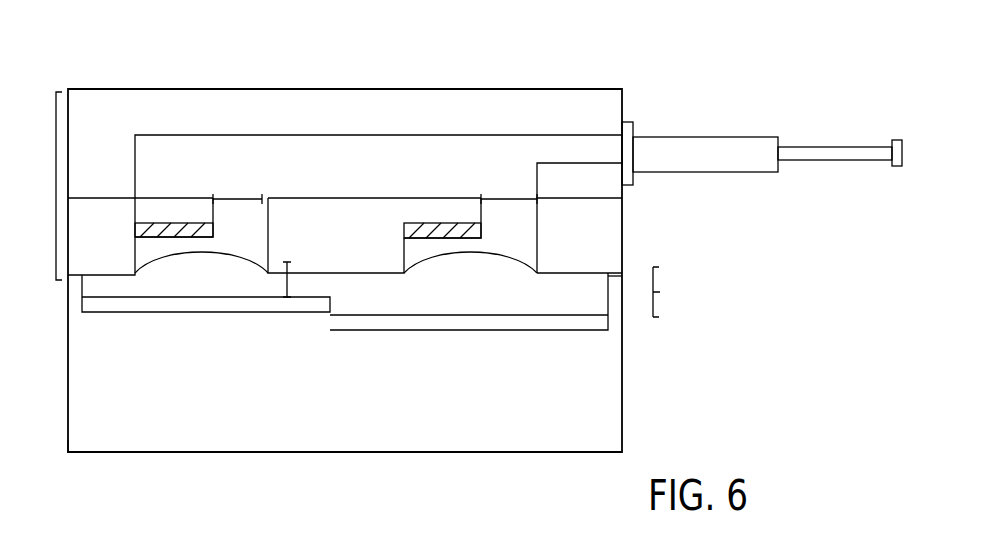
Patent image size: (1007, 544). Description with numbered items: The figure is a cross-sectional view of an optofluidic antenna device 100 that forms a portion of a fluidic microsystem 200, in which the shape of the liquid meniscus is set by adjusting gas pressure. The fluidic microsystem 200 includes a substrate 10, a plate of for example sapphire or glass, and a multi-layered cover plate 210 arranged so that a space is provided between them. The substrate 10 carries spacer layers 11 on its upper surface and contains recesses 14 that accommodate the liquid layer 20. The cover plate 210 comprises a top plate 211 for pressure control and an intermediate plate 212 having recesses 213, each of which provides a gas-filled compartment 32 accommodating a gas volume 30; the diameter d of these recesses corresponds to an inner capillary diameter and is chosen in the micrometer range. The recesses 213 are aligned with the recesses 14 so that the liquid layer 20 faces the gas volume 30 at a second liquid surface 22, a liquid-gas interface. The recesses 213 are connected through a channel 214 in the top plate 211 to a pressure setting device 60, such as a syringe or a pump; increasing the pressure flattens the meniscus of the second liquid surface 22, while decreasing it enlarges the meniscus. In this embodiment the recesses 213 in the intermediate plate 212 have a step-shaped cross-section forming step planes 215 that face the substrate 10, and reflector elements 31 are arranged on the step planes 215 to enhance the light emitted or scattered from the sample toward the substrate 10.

The optofluidic antenna device 100 is at (453, 230).
The fluidic microsystem 200 is at (165, 37).
The substrate 10 is at (108, 424).
The spacer layers 11 is at (108, 306).
The recesses 14 is at (403, 293).
The liquid layer 20 is at (489, 284).
The second liquid surface 22 is at (200, 261).
The gas volume 30 is at (247, 241).
The reflector elements 31 is at (121, 230).
The gas-filled compartment 32 is at (442, 243).
The pressure setting device 60 is at (762, 153).
The cover plate 210 is at (56, 186).
The top plate 211 is at (612, 97).
The intermediate plate 212 is at (606, 245).
The recesses 213 is at (352, 215).
The channel 214 is at (440, 157).
The step planes 215 is at (157, 222).